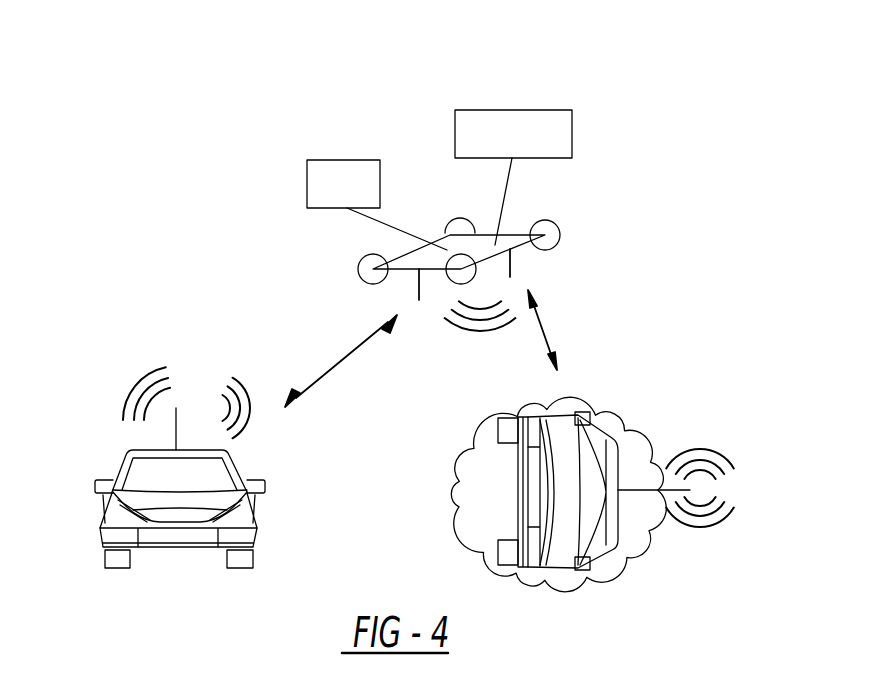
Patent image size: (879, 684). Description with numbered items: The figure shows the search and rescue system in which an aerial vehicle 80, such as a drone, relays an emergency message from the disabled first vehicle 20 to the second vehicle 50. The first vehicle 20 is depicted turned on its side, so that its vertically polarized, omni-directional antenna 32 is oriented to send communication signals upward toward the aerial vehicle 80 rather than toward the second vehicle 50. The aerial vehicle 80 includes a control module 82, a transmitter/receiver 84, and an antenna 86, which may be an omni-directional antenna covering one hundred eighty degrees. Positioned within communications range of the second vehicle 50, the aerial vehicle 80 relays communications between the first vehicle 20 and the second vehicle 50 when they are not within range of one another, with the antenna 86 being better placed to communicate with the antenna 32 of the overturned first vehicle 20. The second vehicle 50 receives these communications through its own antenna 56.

The first vehicle 20 is at (597, 533).
The antenna 32 is at (643, 468).
The second vehicle 50 is at (150, 453).
The antenna 56 is at (177, 417).
The aerial vehicle 80 is at (515, 237).
The control module 82 is at (345, 160).
The transmitter/receiver 84 is at (513, 112).
The antenna 86 is at (420, 290).